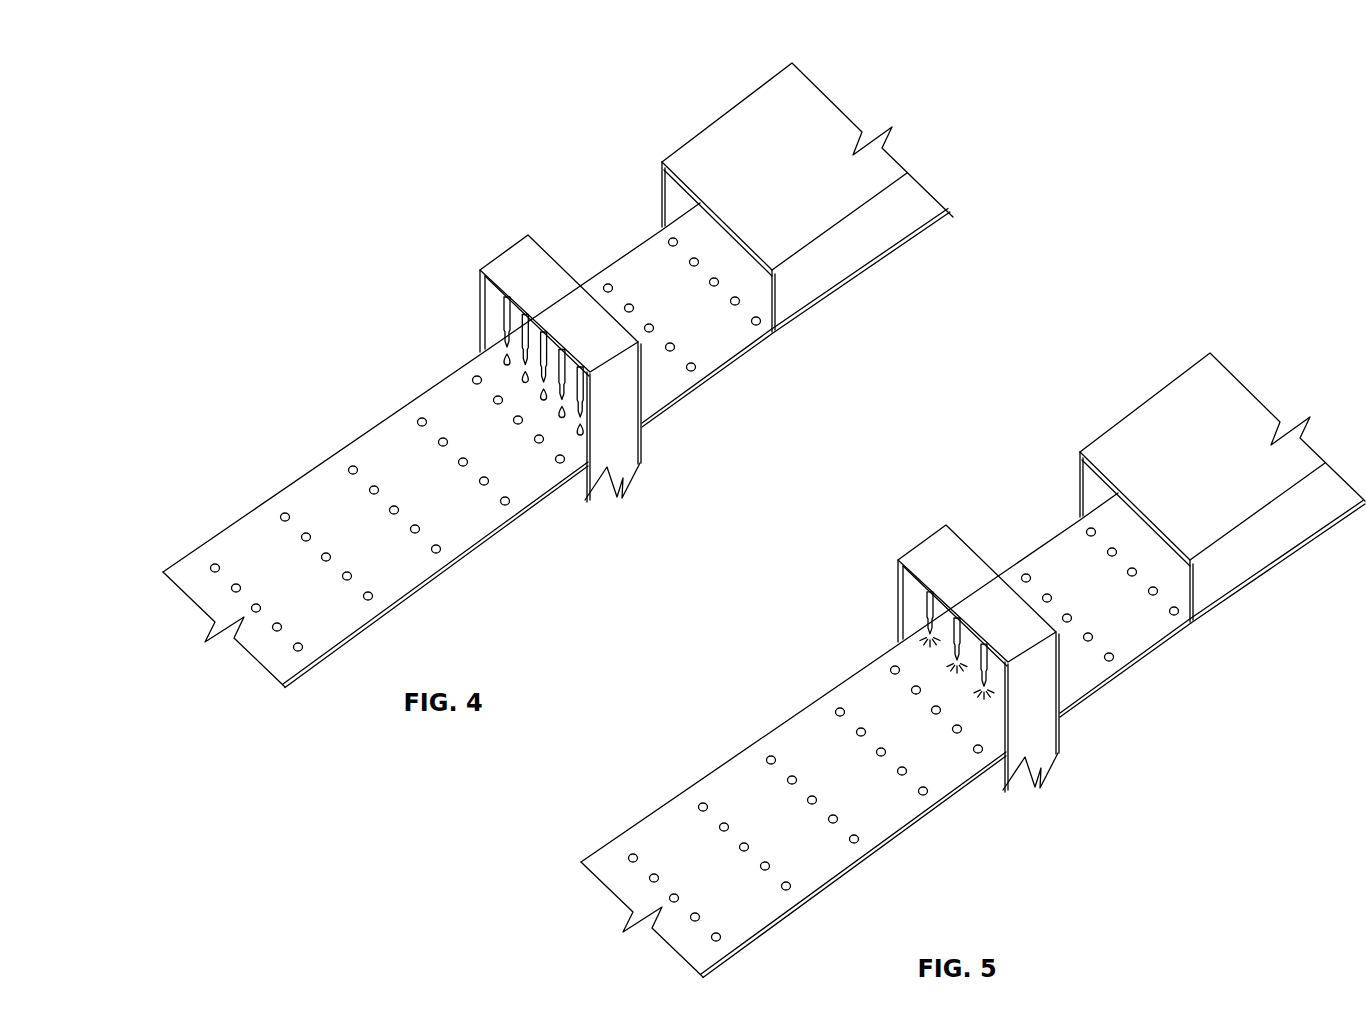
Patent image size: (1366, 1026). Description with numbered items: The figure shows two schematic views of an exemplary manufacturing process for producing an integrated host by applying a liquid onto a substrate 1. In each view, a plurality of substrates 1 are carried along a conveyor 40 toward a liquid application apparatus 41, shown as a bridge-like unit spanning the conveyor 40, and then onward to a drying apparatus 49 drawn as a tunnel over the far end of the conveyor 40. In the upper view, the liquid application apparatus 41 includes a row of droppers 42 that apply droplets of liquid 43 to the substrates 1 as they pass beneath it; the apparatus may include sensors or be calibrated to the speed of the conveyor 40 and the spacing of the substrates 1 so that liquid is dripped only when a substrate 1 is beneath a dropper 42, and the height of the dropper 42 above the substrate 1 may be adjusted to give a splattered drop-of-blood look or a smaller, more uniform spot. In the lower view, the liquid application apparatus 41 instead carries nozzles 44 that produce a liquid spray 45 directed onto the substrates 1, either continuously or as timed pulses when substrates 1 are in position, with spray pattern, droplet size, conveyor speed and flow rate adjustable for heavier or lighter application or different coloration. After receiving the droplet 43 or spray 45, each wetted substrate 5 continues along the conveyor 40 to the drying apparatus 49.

In FIG. 4, the substrate 1 is at (500, 503).
In FIG. 5, the substrate 1 is at (806, 812).
In FIG. 4, the wetted substrate 5 is at (606, 284).
In FIG. 5, the wetted substrate 5 is at (1089, 570).
In FIG. 4, the conveyor 40 is at (317, 475).
In FIG. 5, the conveyor 40 is at (973, 735).
In FIG. 4, the liquid application apparatus 41 is at (642, 443).
In FIG. 5, the liquid application apparatus 41 is at (994, 664).
In FIG. 4, the dropper 42 is at (503, 313).
In FIG. 4, the liquid droplet 43 is at (472, 382).
In FIG. 5, the nozzle 44 is at (922, 707).
In FIG. 5, the liquid spray 45 is at (911, 721).
In FIG. 4, the drying apparatus 49 is at (853, 262).
In FIG. 5, the drying apparatus 49 is at (1222, 498).